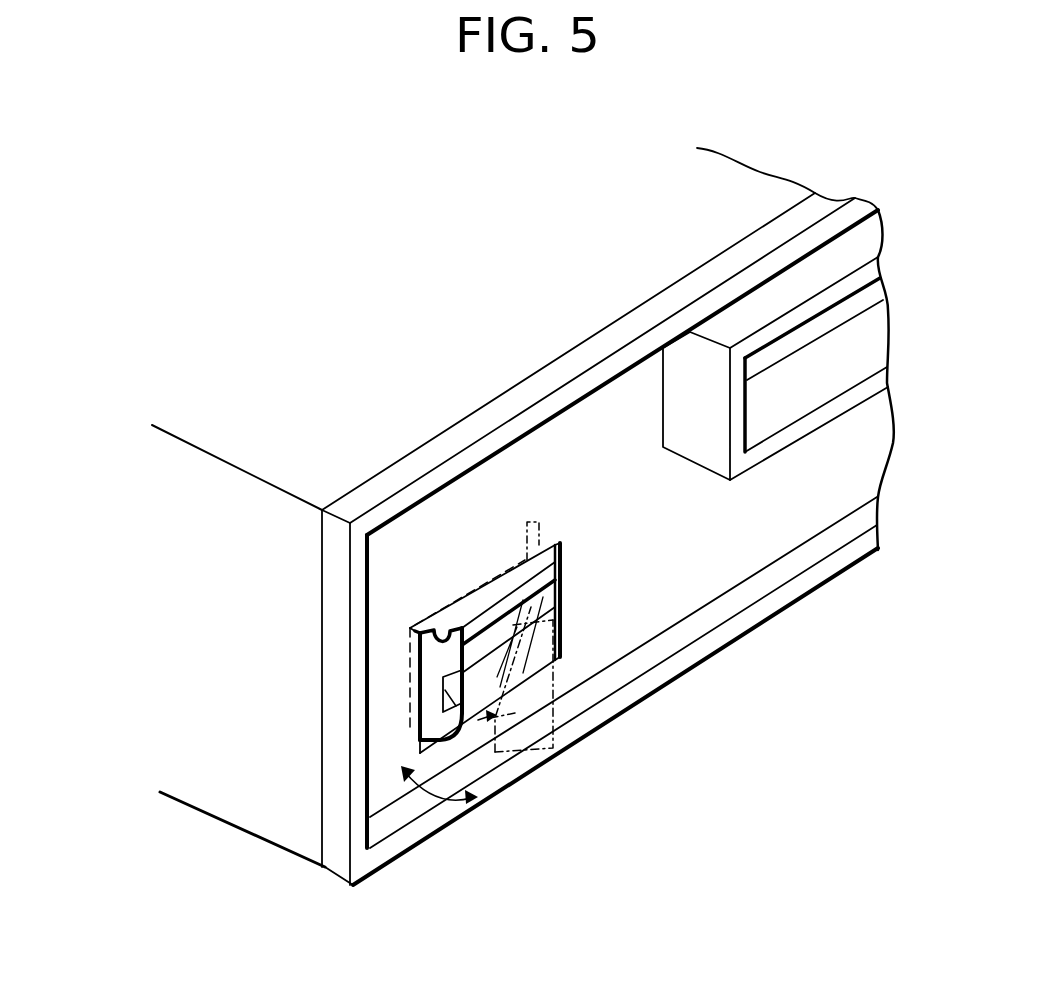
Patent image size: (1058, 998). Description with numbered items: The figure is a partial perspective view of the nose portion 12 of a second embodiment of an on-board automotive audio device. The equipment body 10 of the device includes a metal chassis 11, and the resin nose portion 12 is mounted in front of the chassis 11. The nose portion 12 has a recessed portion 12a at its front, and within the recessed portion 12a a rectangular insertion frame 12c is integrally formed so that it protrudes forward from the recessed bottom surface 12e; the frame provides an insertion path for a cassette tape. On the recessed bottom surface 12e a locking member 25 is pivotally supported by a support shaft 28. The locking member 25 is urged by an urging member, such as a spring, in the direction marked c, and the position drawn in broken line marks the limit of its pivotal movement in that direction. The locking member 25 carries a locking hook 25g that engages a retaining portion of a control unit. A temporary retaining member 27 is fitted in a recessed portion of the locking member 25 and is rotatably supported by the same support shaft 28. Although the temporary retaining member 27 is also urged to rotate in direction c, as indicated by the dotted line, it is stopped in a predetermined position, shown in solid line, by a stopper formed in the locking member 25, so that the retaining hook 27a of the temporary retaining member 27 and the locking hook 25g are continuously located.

The equipment body 10 is at (161, 740).
The chassis 11 is at (230, 797).
The nose portion 12 is at (342, 864).
The recessed portion 12a is at (650, 670).
The insertion frame 12c is at (783, 441).
The recessed bottom surface 12e is at (690, 588).
The locking member 25 is at (394, 555).
The locking hook 25g is at (443, 628).
The temporary retaining member 27 is at (513, 627).
The retaining hook 27a is at (442, 690).
The support shaft 28 is at (547, 527).